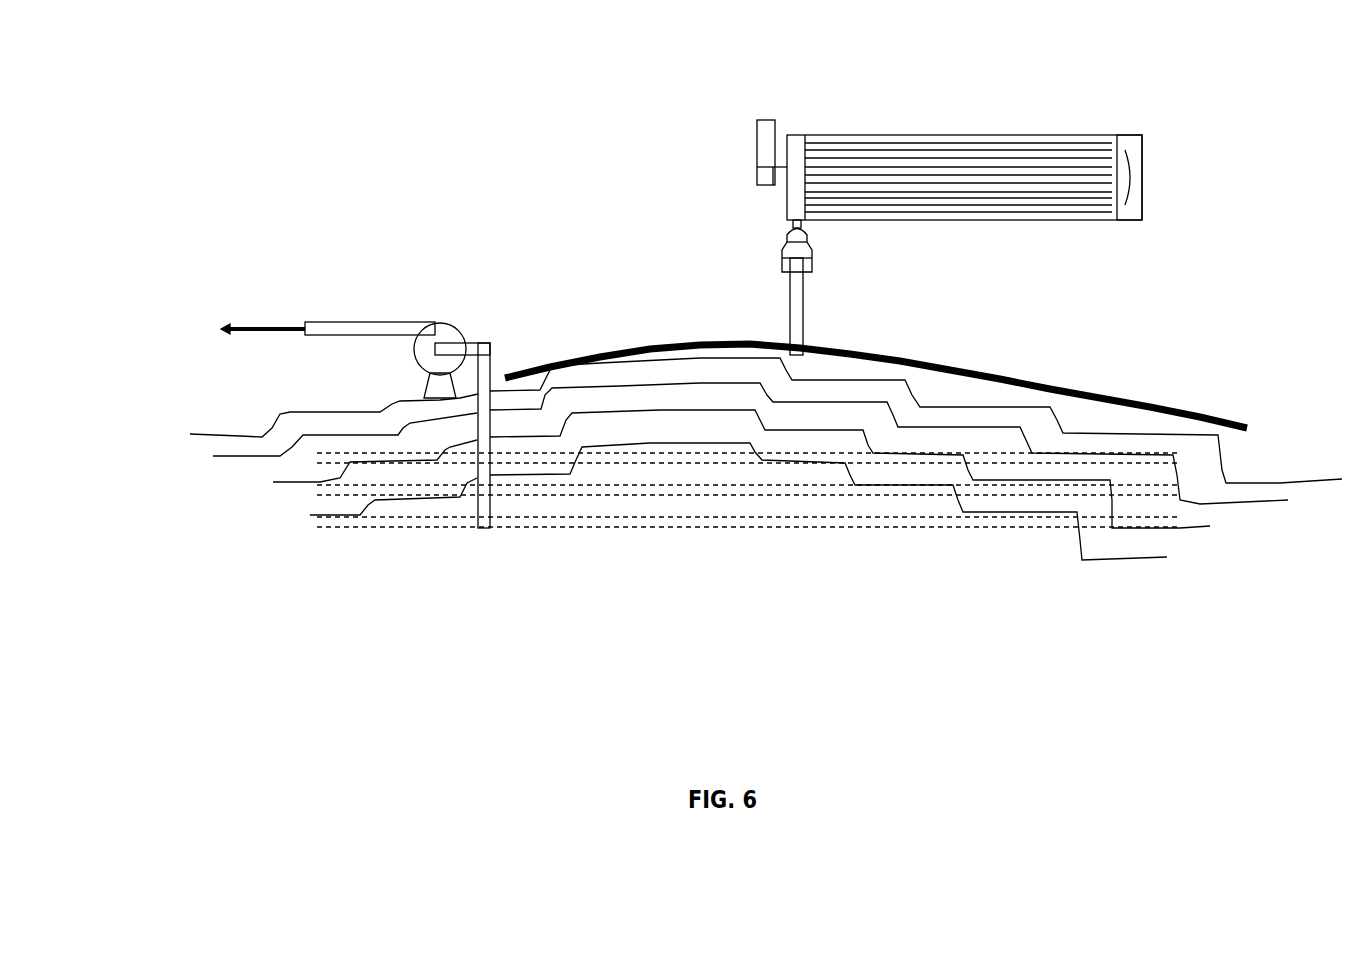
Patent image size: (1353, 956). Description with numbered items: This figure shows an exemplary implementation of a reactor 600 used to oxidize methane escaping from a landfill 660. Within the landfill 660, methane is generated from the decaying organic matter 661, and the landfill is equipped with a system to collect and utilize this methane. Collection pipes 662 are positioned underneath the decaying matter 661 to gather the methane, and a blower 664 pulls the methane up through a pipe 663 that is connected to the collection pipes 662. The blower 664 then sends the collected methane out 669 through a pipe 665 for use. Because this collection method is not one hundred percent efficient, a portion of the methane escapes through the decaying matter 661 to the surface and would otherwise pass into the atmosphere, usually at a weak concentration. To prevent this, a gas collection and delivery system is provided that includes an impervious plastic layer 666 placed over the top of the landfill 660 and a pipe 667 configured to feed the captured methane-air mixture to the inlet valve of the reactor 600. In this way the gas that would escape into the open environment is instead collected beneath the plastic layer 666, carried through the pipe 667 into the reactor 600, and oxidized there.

The reactor 600 is at (1070, 116).
The landfill 660 is at (155, 515).
The decaying organic matter 661 is at (273, 420).
The collection pipes 662 is at (533, 497).
The pipe 663 is at (492, 347).
The blower 664 is at (463, 327).
The pipe 665 is at (352, 322).
The impervious plastic layer 666 is at (1132, 400).
The pipe 667 is at (805, 306).
The collected methane out 669 is at (264, 322).